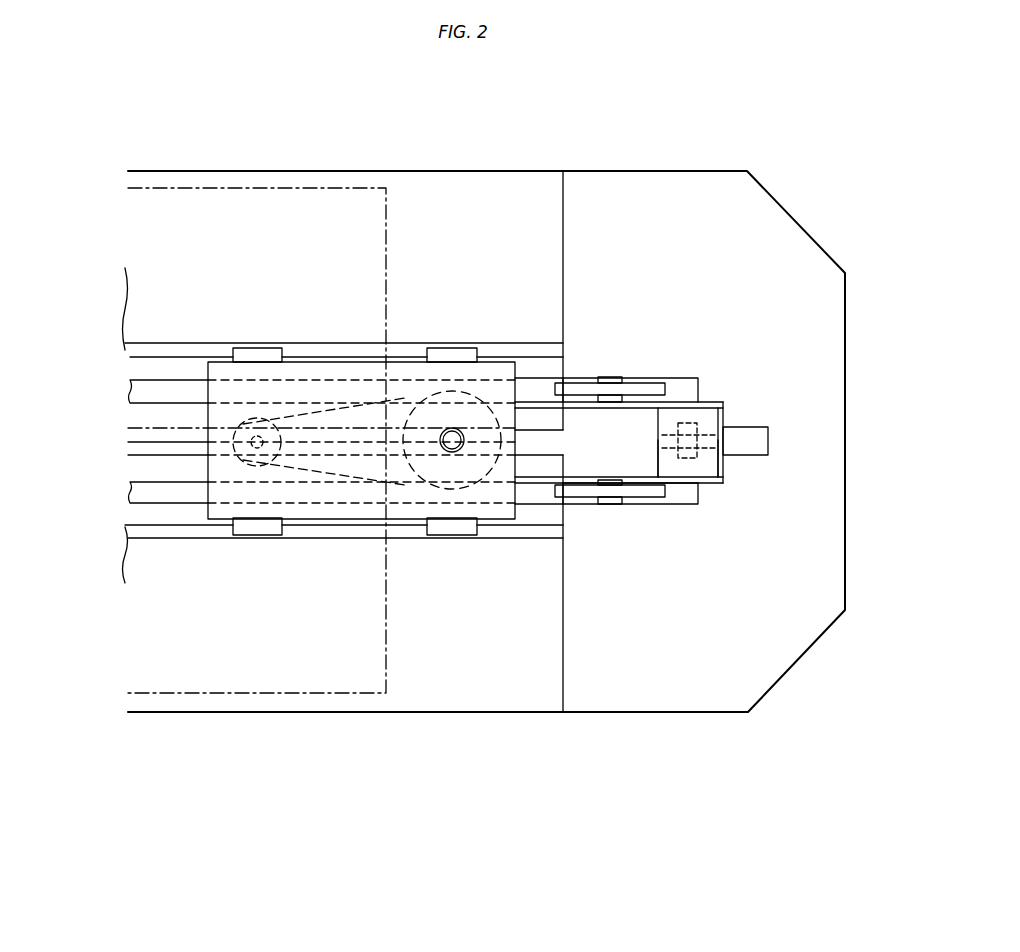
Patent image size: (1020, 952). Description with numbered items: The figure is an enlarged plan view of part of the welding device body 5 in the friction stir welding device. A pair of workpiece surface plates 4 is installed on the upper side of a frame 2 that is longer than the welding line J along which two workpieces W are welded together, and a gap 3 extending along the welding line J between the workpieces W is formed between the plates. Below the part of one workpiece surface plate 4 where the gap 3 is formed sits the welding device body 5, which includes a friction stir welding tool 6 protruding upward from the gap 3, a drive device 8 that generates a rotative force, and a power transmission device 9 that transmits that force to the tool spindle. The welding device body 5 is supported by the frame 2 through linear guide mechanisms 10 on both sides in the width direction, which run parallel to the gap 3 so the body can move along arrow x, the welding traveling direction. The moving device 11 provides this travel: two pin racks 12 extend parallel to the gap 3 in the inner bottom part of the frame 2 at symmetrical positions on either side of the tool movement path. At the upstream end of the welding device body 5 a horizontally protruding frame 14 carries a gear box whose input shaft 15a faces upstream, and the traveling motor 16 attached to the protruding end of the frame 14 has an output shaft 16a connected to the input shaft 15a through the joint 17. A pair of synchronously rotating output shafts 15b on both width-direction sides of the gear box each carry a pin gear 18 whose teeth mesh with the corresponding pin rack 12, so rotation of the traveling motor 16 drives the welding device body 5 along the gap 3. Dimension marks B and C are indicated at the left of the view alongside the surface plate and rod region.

The frame 2 is at (772, 213).
The gap 3 is at (543, 440).
The workpiece surface plate 4 is at (563, 223).
The welding device body 5 is at (729, 346).
The friction stir welding tool 6 is at (452, 452).
The drive device 8 is at (257, 458).
The power transmission device 9 is at (300, 473).
The linear guide mechanism 10 is at (320, 343).
The moving device 11 is at (713, 397).
The pin rack 12 is at (682, 387).
The frame 14 is at (635, 457).
The input shaft 15a is at (672, 445).
The output shaft 15b is at (612, 378).
The traveling motor 16 is at (762, 442).
The output shaft 16a is at (710, 448).
The joint 17 is at (700, 427).
The pin gear 18 is at (583, 378).
The welding line J is at (162, 442).
The workpiece W is at (340, 188).
The dimension B is at (65, 390).
The dimension C is at (65, 492).
The welding traveling direction arrow x is at (408, 325).